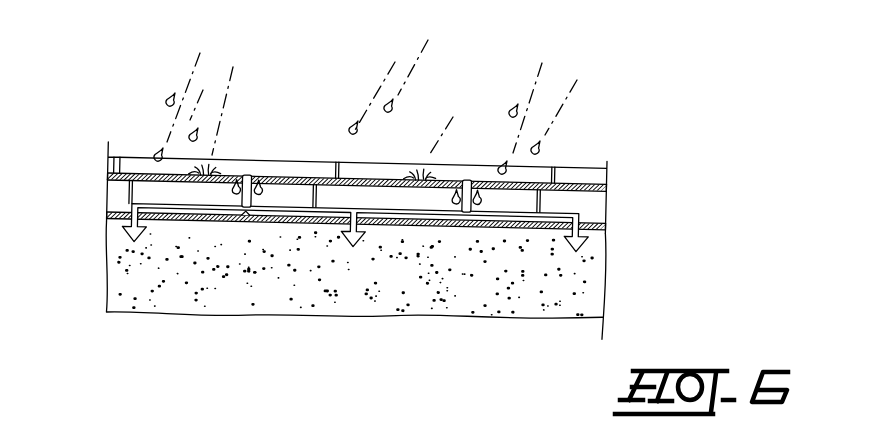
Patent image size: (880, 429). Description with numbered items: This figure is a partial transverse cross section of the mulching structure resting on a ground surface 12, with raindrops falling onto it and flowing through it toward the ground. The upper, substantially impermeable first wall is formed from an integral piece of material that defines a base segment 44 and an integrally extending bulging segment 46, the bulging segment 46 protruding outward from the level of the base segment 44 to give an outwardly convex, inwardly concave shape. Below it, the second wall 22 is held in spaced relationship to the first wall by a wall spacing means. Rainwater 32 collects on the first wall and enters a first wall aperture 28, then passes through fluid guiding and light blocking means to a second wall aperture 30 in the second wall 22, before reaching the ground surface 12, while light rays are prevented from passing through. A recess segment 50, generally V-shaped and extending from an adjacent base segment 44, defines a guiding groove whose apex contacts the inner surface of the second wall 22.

The ground surface 12 is at (572, 280).
The second wall 22 is at (244, 218).
The first wall aperture 28 is at (239, 170).
The second wall aperture 30 is at (123, 222).
The rainwater 32 is at (259, 182).
The base segment 44 is at (568, 175).
The bulging segment 46 is at (449, 165).
The recess segment 50 is at (384, 196).